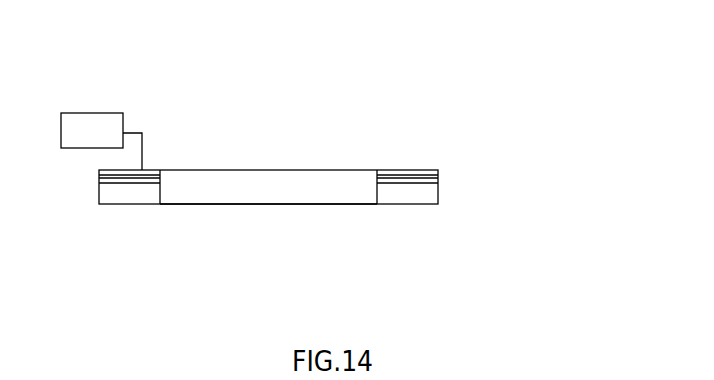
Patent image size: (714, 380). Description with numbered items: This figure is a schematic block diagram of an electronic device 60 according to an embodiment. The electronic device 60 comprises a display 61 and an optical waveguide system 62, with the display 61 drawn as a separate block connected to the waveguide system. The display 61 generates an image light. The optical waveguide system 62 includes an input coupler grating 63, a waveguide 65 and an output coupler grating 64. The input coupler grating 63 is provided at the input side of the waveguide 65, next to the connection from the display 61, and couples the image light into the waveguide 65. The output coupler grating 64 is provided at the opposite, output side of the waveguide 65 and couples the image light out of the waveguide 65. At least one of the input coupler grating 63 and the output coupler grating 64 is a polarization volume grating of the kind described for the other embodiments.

The electronic device 60 is at (425, 107).
The display 61 is at (87, 112).
The optical waveguide system 62 is at (233, 180).
The input coupler grating 63 is at (133, 205).
The output coupler grating 64 is at (410, 205).
The waveguide 65 is at (277, 205).